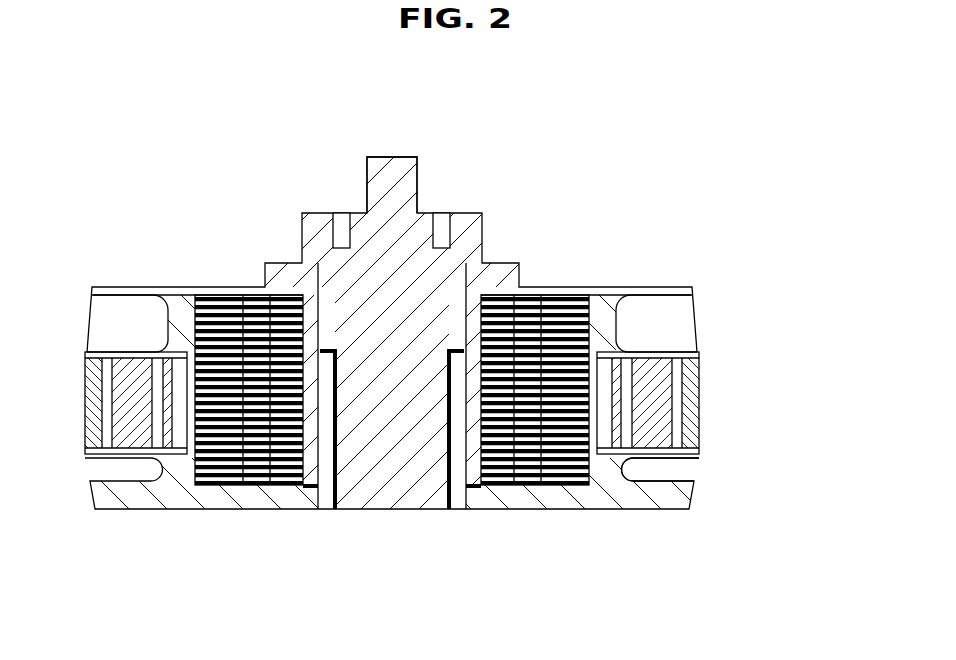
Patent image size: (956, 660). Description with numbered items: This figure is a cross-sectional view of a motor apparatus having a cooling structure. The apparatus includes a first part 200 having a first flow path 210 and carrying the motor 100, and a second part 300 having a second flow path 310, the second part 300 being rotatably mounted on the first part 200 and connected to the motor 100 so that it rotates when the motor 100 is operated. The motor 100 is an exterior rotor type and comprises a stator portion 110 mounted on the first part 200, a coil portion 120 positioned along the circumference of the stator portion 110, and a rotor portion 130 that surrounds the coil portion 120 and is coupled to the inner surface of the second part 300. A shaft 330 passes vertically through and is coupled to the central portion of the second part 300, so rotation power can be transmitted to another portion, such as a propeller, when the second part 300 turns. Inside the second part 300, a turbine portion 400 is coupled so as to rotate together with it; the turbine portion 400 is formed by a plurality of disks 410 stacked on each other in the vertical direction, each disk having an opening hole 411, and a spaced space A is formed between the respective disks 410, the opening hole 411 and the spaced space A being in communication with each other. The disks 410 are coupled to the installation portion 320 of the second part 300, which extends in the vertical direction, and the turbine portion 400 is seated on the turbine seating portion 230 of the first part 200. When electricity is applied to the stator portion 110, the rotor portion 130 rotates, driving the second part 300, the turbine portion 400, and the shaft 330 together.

The motor 100 is at (727, 398).
The stator portion 110 is at (703, 372).
The coil portion 120 is at (703, 402).
The rotor portion 130 is at (703, 433).
The first part 200 is at (443, 540).
The first flow path 210 is at (690, 467).
The turbine seating portion 230 is at (447, 475).
The second part 300 is at (627, 282).
The second flow path 310 is at (88, 313).
The installation portion 320 is at (462, 335).
The shaft 330 is at (376, 248).
The turbine portion 400 is at (368, 407).
The disks 410 is at (240, 320).
The opening hole 411 is at (260, 455).
The spaced space A is at (553, 455).